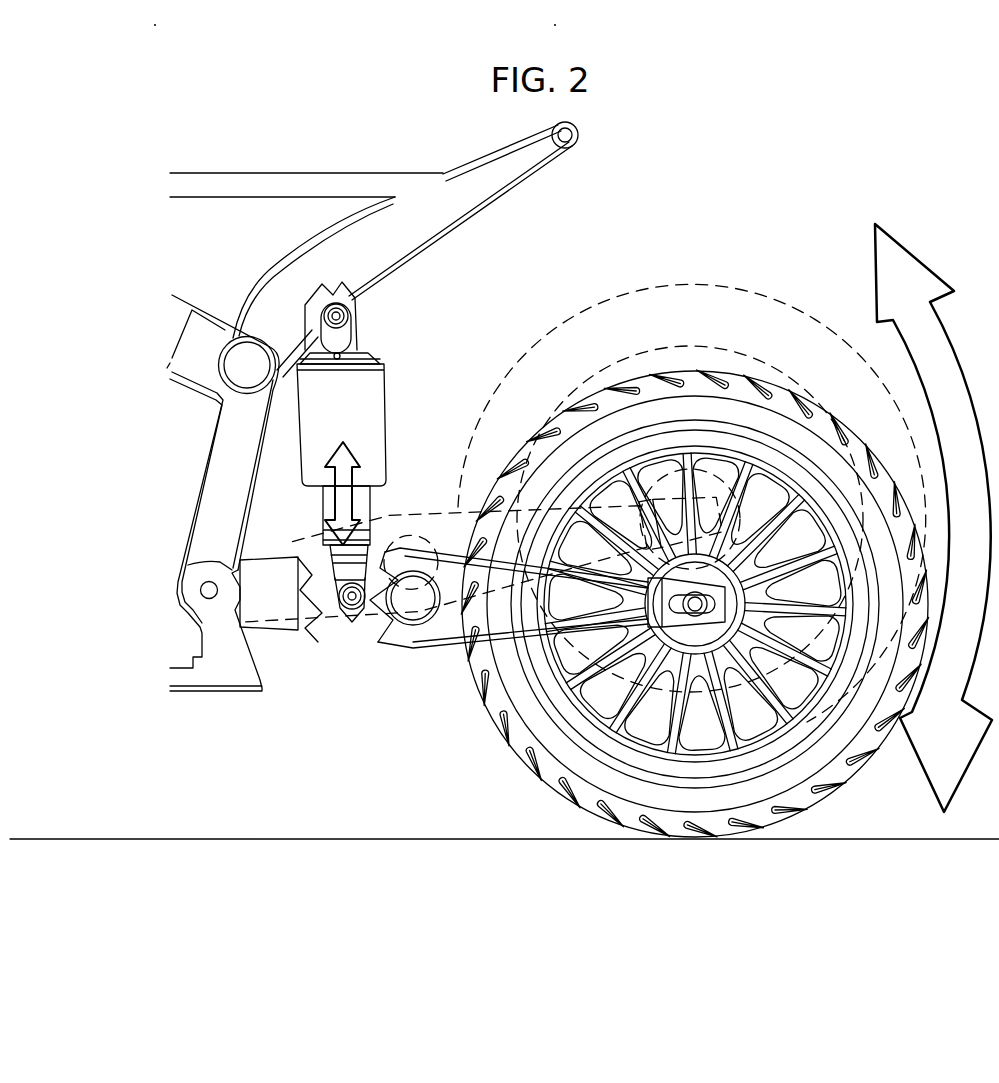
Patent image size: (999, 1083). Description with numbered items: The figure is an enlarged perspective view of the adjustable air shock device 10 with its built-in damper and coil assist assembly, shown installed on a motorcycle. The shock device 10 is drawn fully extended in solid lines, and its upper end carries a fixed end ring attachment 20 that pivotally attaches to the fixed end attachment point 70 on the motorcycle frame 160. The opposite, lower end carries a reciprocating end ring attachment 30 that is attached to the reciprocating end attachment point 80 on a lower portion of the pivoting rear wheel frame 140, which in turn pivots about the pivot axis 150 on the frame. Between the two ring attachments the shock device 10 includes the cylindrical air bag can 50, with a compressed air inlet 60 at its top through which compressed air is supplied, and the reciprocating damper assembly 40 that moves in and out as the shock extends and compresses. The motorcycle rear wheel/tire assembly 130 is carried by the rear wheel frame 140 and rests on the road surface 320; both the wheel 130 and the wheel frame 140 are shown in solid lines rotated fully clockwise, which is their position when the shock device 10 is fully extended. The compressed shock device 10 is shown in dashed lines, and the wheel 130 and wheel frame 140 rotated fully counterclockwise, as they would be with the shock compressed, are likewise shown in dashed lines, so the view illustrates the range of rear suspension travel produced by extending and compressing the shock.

The shock device with assist coil 10 is at (410, 366).
The fixed end ring attachment 20 is at (313, 303).
The reciprocating end ring attachment 30 is at (345, 613).
The reciprocating damper assembly 40 is at (328, 504).
The air bag can 50 is at (300, 417).
The compressed air inlet 60 is at (340, 340).
The fixed end attachment point on motorcycle 70 is at (322, 300).
The reciprocating end attachment point on motorcycle rear wheel mount frame 80 is at (352, 603).
The motorcycle rear wheel/tire assembly 130 is at (520, 742).
The pivoting rear wheel frame 140 is at (437, 633).
The pivot axis for rear wheel frame 150 is at (205, 594).
The motorcycle frame 160 is at (191, 678).
The road surface 320 is at (175, 838).